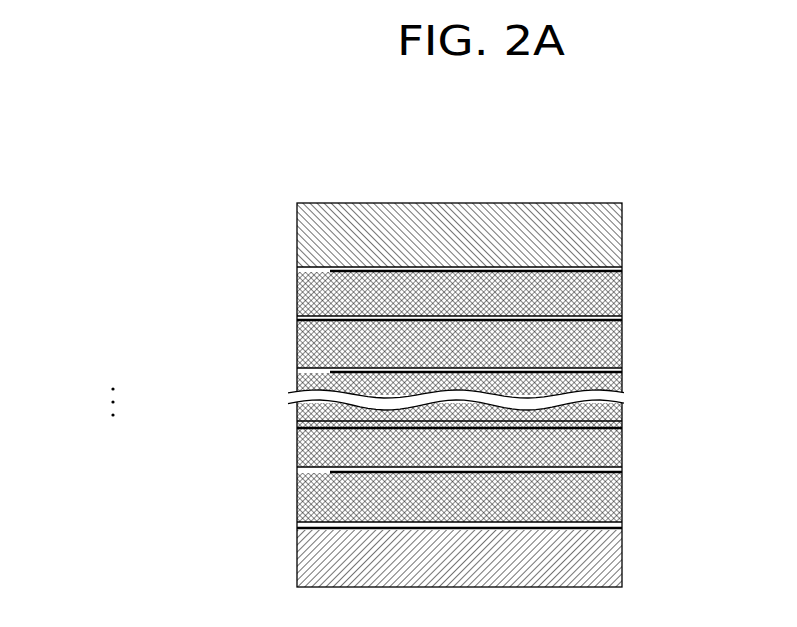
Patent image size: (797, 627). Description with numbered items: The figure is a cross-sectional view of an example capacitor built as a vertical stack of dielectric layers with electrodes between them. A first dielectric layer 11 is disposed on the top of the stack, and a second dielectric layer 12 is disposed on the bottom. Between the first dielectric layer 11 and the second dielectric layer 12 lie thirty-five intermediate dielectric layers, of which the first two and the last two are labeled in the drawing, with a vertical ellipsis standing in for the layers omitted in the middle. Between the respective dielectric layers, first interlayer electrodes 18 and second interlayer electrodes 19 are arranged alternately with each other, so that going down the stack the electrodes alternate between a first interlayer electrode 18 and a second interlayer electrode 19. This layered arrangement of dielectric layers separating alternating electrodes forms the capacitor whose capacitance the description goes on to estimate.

The first dielectric layer 11 is at (345, 243).
The second dielectric layer 12 is at (353, 555).
The first interlayer electrode 18 is at (578, 269).
The second interlayer electrode 19 is at (570, 318).